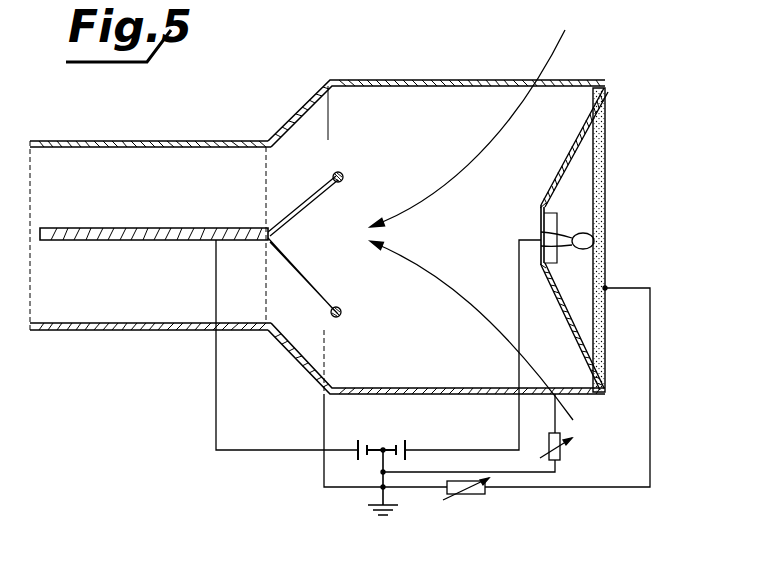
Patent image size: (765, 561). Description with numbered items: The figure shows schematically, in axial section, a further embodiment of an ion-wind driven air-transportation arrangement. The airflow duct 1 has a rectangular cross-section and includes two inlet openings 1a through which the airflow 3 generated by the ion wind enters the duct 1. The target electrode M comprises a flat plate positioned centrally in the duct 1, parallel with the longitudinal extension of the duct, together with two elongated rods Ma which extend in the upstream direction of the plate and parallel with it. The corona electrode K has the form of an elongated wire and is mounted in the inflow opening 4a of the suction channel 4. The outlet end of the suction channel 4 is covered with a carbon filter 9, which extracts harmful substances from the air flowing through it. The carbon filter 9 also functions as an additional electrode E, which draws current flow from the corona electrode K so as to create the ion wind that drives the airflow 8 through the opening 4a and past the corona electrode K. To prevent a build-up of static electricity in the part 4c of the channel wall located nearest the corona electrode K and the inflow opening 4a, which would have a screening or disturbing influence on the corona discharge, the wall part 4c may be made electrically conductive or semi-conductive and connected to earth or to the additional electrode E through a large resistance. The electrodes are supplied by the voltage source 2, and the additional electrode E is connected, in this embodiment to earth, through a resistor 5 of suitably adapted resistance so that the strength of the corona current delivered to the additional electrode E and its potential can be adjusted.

The airflow duct 1 is at (384, 80).
The inlet openings 1a is at (514, 80).
The target electrode M is at (180, 228).
The elongated rods Ma is at (341, 173).
The airflow 3 is at (416, 208).
The suction channel 4 is at (575, 141).
The inflow opening 4a is at (541, 222).
The channel wall part 4c is at (541, 211).
The corona electrode K is at (541, 237).
The airflow 8 is at (596, 244).
The carbon filter 9 is at (606, 124).
The additional electrode E is at (606, 159).
The voltage source 2 is at (400, 438).
The resistor 5 is at (476, 496).